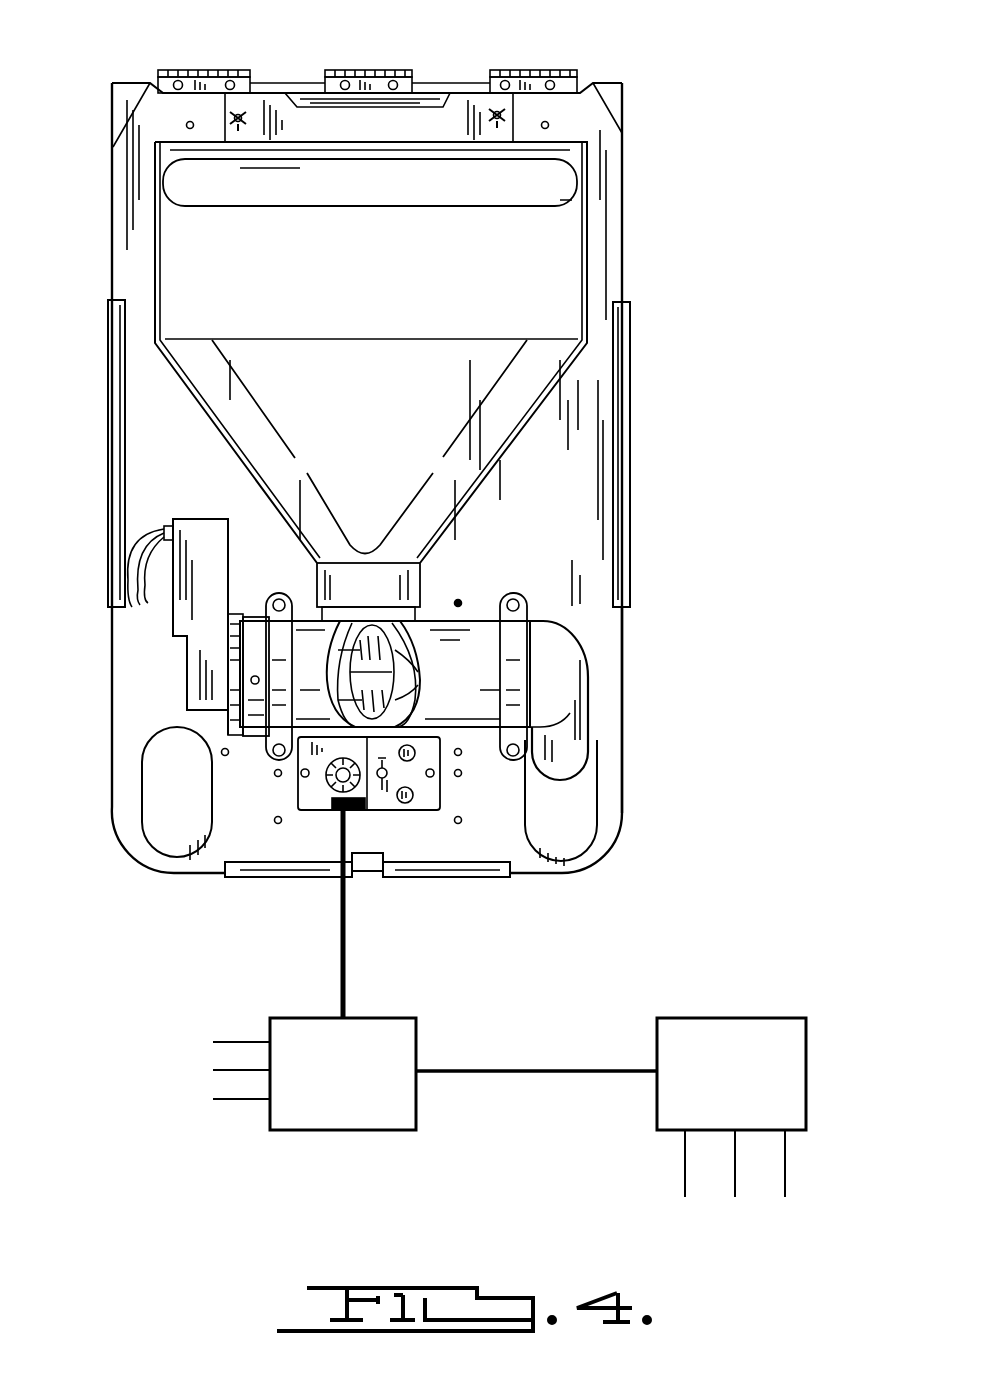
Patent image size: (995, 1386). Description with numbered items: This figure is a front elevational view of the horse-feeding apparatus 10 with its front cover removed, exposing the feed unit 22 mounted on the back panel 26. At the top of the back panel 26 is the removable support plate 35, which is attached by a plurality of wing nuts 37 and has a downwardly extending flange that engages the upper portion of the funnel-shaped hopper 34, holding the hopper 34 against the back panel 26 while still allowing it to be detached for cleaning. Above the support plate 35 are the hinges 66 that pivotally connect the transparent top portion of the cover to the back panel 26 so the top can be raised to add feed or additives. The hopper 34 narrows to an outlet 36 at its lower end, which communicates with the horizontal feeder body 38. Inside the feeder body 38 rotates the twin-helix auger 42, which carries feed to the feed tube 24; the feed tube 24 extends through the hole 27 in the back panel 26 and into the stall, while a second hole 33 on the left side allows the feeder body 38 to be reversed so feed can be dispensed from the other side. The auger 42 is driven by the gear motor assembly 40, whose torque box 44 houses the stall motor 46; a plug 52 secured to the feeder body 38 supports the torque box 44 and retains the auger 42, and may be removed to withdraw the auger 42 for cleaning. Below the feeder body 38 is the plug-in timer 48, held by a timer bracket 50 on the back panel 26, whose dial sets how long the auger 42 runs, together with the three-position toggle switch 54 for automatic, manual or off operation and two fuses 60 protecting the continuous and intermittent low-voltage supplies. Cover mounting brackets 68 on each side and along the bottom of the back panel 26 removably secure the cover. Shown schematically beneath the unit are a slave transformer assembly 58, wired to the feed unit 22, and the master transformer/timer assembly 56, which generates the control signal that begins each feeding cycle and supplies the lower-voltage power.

The apparatus 10 is at (776, 100).
The feed unit 22 is at (528, 505).
The feed tube 24 is at (572, 745).
The back panel 26 is at (600, 648).
The hole 27 is at (590, 822).
The hole 33 is at (150, 820).
The funnel-shaped hopper 34 is at (586, 240).
The removable support plate 35 is at (380, 138).
The outlet 36 is at (426, 563).
The wing nuts 37 is at (234, 116).
The feeder body 38 is at (465, 705).
The gear motor assembly 40 is at (182, 651).
The auger 42 is at (403, 652).
The torque box 44 is at (195, 678).
The stall motor 46 is at (216, 640).
The timer 48 is at (338, 792).
The timer bracket 50 is at (392, 815).
The plug 52 is at (222, 740).
The toggle switch 54 is at (380, 790).
The master transformer/timer assembly 56 is at (731, 1107).
The slave transformer assemblies 58 is at (435, 1074).
The fuses 60 is at (410, 803).
The hinges 66 is at (218, 70).
The cover mounting brackets 68 is at (116, 382).